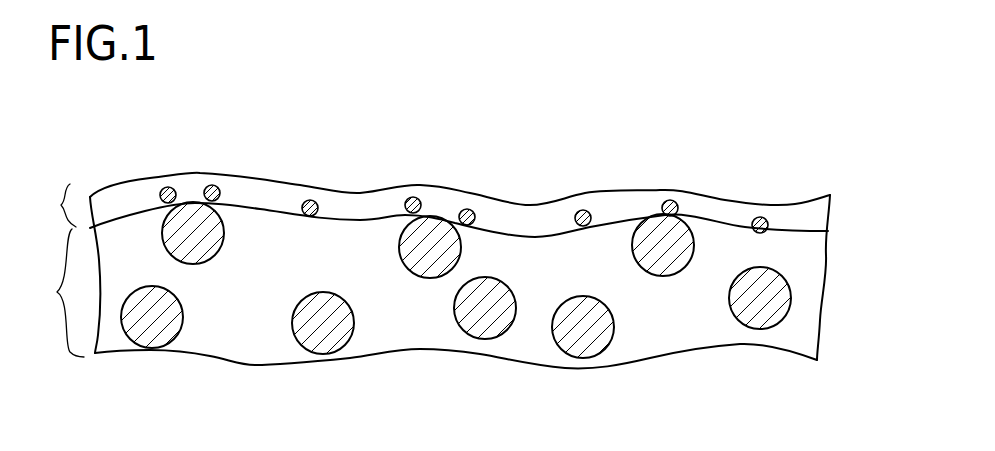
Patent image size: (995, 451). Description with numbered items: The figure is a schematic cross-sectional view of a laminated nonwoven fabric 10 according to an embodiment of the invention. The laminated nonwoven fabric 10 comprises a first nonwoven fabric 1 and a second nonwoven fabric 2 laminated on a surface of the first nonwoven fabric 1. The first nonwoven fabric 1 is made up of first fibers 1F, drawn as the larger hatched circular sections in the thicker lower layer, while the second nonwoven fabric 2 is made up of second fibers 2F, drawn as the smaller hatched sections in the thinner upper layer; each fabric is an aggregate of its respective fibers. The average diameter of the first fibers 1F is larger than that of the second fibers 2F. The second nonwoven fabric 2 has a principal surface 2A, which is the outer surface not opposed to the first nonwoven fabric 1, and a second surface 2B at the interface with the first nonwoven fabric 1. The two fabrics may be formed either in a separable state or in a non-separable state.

The laminated nonwoven fabric 10 is at (466, 152).
The first nonwoven fabric 1 is at (428, 298).
The second nonwoven fabric 2 is at (58, 205).
The first fibers 1F is at (162, 330).
The second fibers 2F is at (173, 190).
The principal surface 2A is at (633, 190).
The second surface 2B is at (813, 232).